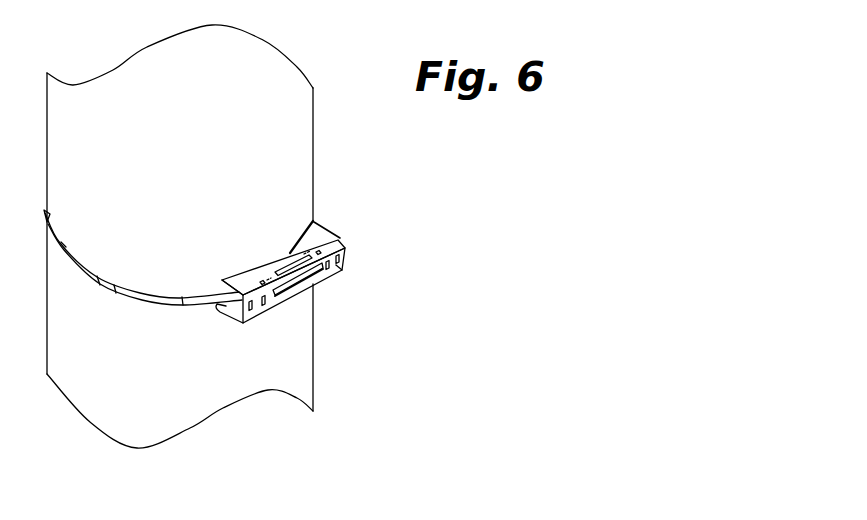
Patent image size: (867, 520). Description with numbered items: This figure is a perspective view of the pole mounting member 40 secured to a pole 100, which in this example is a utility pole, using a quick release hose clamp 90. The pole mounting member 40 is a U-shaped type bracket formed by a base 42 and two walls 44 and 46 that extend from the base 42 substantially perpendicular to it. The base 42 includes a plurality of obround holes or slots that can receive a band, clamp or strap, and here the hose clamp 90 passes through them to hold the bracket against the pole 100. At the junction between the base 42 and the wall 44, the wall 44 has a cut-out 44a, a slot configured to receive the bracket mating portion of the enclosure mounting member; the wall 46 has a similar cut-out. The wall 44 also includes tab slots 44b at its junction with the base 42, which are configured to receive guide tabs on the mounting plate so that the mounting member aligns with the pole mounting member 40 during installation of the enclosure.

The pole 100 is at (194, 123).
The quick release hose clamp 90 is at (115, 287).
The pole mounting member 40 is at (300, 267).
The base 42 is at (347, 251).
The wall 44 is at (331, 235).
The cut-out 44a is at (291, 262).
The tab slots 44b is at (261, 280).
The wall 46 is at (228, 322).